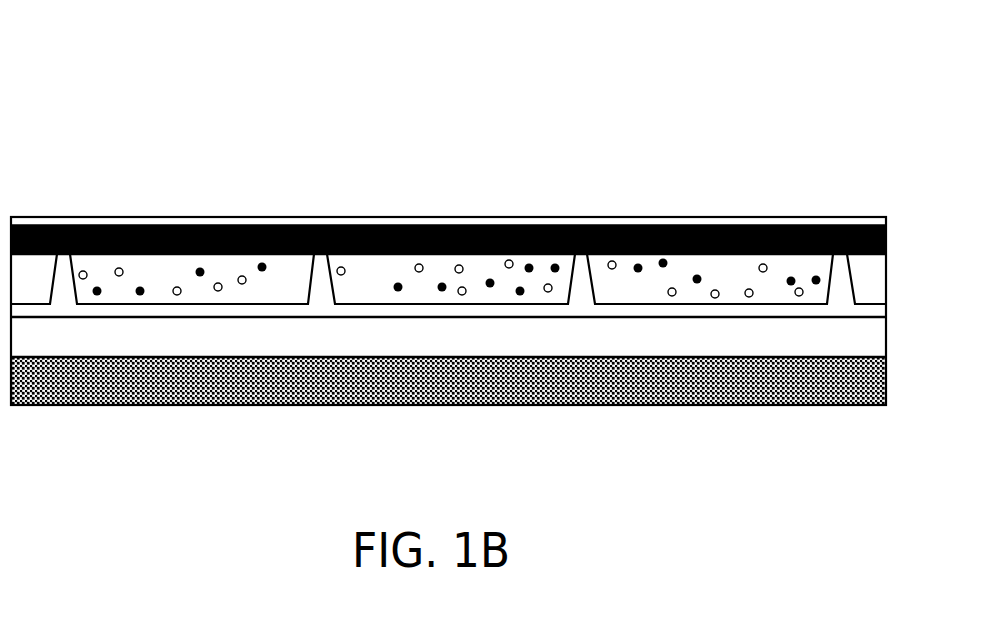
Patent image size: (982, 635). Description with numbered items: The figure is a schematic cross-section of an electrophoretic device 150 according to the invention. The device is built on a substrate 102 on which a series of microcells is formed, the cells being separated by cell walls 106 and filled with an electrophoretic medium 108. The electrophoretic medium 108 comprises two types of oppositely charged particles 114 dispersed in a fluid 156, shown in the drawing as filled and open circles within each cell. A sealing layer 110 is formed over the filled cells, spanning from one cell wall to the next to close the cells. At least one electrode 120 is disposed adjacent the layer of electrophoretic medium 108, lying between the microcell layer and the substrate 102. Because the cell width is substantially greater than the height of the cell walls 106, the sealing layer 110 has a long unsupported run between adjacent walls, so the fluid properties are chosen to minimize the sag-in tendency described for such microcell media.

The electrophoretic device 150 is at (86, 110).
The charged particles 114 is at (139, 287).
The fluid 156 is at (166, 270).
The sealing layer 110 is at (443, 247).
The cell walls 106 is at (575, 277).
The electrophoretic medium 108 is at (306, 302).
The electrode 120 is at (480, 351).
The substrate 102 is at (478, 395).